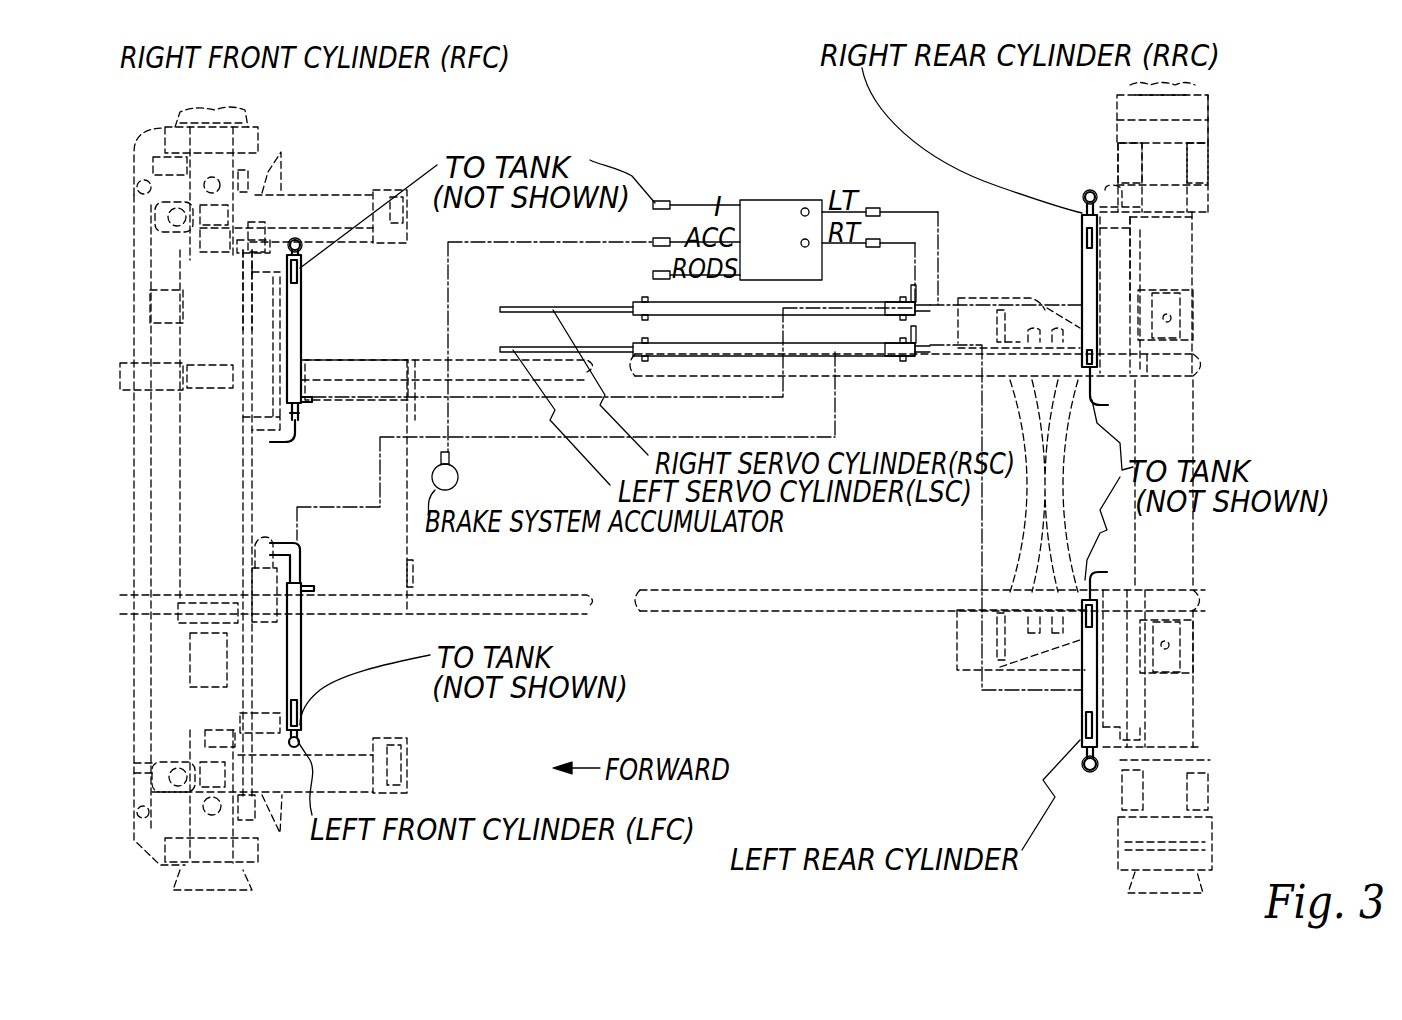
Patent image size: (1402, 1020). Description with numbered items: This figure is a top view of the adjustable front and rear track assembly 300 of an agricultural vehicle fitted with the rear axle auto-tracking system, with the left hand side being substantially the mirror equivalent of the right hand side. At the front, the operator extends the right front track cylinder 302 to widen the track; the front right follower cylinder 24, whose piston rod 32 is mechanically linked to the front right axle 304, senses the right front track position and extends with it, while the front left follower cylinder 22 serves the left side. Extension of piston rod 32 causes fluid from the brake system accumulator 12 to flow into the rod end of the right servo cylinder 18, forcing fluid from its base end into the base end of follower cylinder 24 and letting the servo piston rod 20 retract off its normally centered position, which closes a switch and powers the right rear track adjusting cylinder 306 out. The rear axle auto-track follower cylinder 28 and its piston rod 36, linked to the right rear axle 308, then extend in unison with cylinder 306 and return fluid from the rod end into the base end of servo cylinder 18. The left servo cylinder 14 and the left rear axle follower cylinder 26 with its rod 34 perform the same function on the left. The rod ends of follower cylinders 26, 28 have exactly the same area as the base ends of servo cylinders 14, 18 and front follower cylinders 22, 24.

The brake system accumulator 12 is at (455, 470).
The servo cylinder 14 is at (720, 342).
The right servo cylinder 18 is at (652, 303).
The piston rod 20 is at (560, 305).
The front left follower cylinder 22 is at (298, 645).
The front right follower cylinder 24 is at (303, 290).
The rear axle follower cylinder 26 is at (1082, 700).
The rear axle auto-track follower cylinder 28 is at (1082, 272).
The piston rod 32 is at (300, 246).
The rod 34 is at (1087, 759).
The piston rod 36 is at (1084, 200).
The track assembly 300 is at (662, 162).
The right front track cylinder 302 is at (257, 290).
The front right axle 304 is at (200, 248).
The right rear track adjusting cylinder 306 is at (1115, 259).
The right rear axle 308 is at (1182, 210).